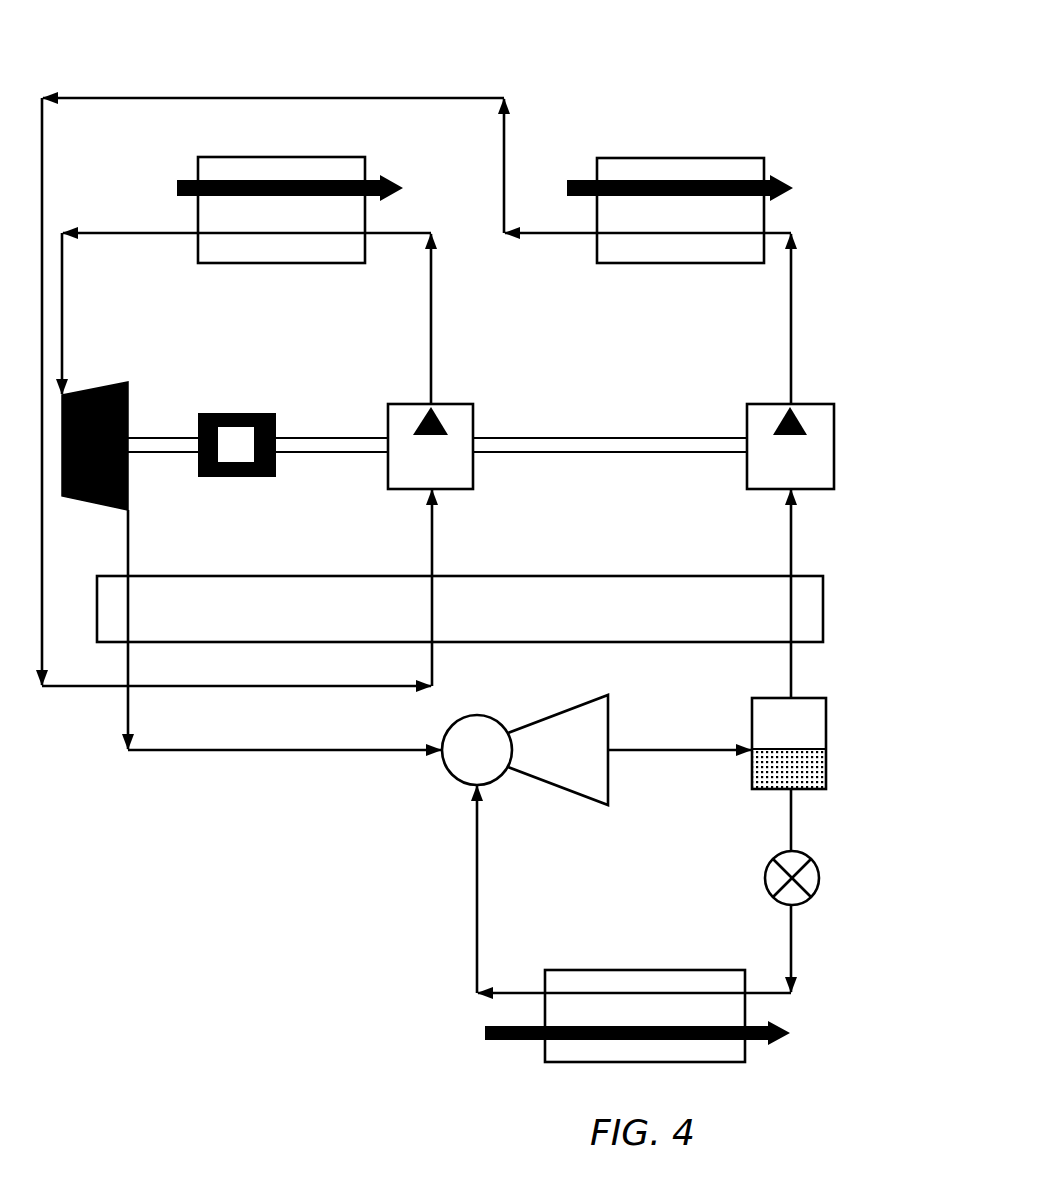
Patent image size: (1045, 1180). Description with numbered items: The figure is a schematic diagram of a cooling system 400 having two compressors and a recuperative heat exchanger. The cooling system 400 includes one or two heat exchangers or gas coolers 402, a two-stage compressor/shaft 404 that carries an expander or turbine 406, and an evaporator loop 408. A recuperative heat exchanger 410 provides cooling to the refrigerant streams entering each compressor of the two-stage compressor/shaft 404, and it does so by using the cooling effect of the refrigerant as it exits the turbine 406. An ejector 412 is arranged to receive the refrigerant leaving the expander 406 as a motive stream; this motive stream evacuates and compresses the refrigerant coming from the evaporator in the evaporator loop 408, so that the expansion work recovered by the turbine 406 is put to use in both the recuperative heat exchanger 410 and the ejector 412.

The cooling system 400 is at (846, 170).
The heat exchangers or gas coolers 402 is at (609, 144).
The two-stage compressor/shaft 404 is at (847, 443).
The expander or turbine 406 is at (102, 507).
The evaporator loop 408 is at (829, 837).
The recuperative heat exchanger 410 is at (823, 600).
The ejector 412 is at (427, 790).